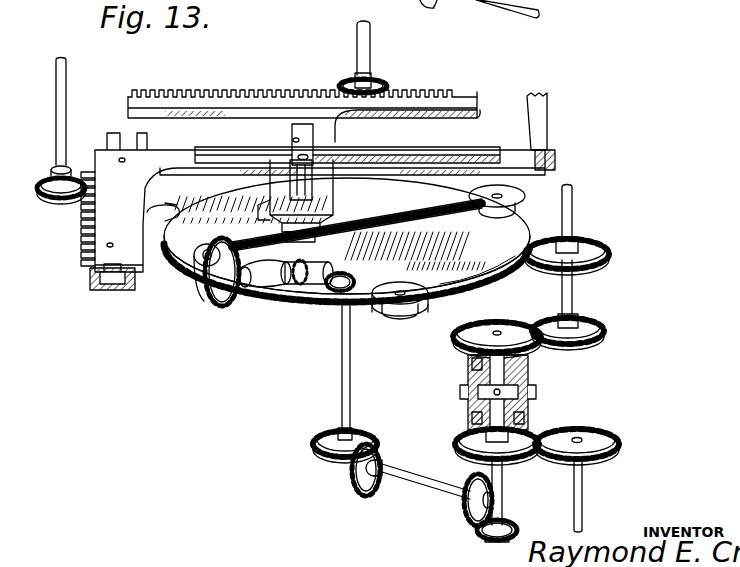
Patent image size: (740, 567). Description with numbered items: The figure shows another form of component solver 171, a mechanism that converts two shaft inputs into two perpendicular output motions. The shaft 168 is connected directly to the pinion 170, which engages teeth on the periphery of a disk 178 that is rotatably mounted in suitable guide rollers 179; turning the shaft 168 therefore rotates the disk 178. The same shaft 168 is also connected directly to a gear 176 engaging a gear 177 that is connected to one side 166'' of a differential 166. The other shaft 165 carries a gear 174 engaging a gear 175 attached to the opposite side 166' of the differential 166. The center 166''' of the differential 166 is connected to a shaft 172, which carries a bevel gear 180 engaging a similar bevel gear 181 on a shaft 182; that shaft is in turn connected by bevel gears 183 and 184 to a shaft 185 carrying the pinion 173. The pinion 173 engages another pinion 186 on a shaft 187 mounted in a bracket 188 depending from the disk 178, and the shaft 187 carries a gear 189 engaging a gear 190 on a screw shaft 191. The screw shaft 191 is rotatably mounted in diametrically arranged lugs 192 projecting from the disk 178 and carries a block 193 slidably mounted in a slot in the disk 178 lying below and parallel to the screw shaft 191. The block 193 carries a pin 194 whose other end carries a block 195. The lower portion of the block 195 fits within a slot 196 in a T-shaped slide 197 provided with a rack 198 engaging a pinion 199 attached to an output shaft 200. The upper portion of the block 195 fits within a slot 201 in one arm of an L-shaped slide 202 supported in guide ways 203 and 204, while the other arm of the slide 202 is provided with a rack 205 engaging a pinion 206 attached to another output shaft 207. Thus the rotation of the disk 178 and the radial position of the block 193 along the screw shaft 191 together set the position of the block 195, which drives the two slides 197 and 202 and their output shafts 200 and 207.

The shaft 165 is at (582, 502).
The differential 166 is at (526, 392).
The side of the differential 166' is at (545, 420).
The side of the differential 166'' is at (442, 371).
The center of the differential 166''' is at (442, 415).
The shaft 168 is at (572, 212).
The pinion 170 is at (605, 245).
The drive mechanism 171 is at (220, 374).
The shaft 172 is at (503, 500).
The pinion 173 is at (358, 305).
The gear 174 is at (615, 448).
The gear 175 is at (511, 453).
The gear 176 is at (602, 327).
The gear 177 is at (488, 323).
The disk 178 is at (490, 276).
The guide rollers 179 is at (520, 190).
The bevel gear 180 is at (488, 533).
The bevel gear 181 is at (467, 511).
The shaft 182 is at (420, 485).
The bevel gear 183 is at (352, 490).
The bevel gear 184 is at (330, 460).
The shaft 185 is at (341, 398).
The pinion 186 is at (324, 304).
The shaft 187 is at (284, 304).
The bracket 188 is at (268, 300).
The gear 189 is at (222, 313).
The gear 190 is at (191, 265).
The screw shaft 191 is at (395, 225).
The lugs 192 is at (195, 285).
The block 193 is at (322, 226).
The pin 194 is at (306, 198).
The block 195 is at (312, 153).
The slot 196 is at (290, 137).
The T-shaped slide 197 is at (293, 103).
The rack 198 is at (233, 90).
The pinion 199 is at (383, 82).
The output shaft 200 is at (366, 48).
The slot 201 is at (417, 160).
The L-shaped slide 202 is at (152, 158).
The guide way 203 is at (548, 133).
The guide way 204 is at (112, 290).
The rack 205 is at (78, 232).
The pinion 206 is at (70, 196).
The output shaft 207 is at (62, 108).